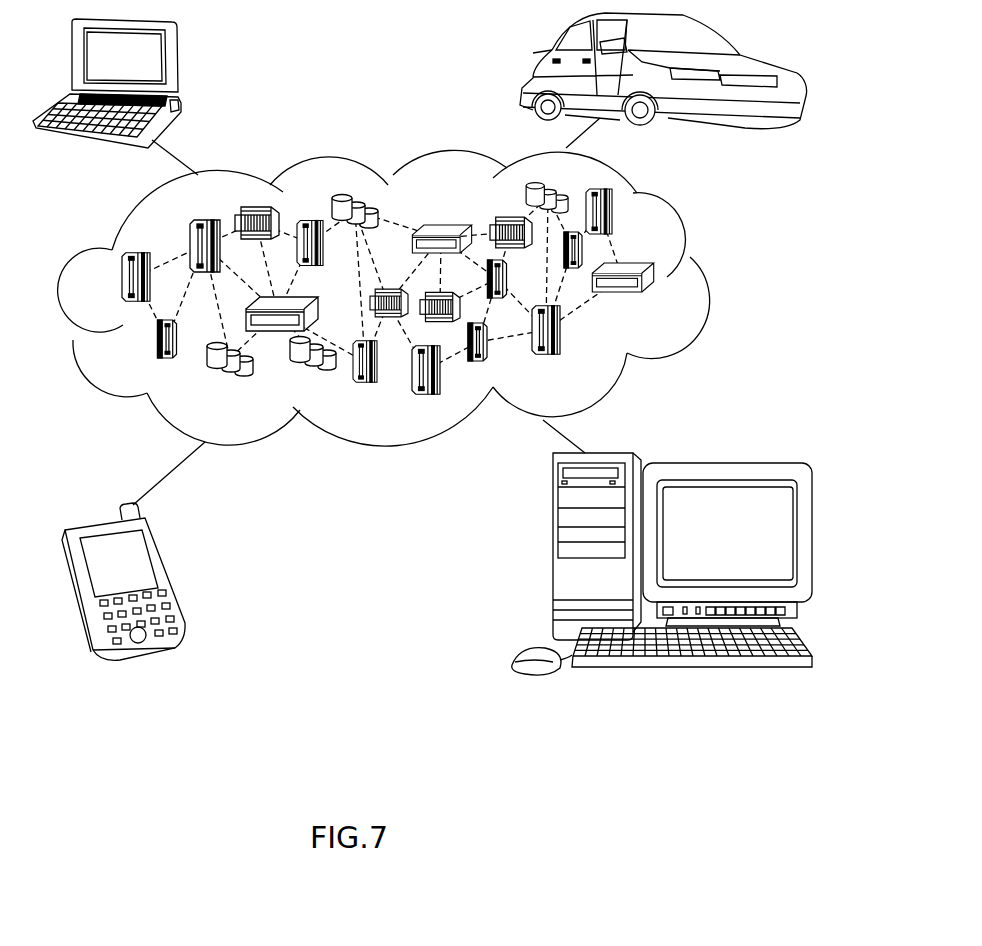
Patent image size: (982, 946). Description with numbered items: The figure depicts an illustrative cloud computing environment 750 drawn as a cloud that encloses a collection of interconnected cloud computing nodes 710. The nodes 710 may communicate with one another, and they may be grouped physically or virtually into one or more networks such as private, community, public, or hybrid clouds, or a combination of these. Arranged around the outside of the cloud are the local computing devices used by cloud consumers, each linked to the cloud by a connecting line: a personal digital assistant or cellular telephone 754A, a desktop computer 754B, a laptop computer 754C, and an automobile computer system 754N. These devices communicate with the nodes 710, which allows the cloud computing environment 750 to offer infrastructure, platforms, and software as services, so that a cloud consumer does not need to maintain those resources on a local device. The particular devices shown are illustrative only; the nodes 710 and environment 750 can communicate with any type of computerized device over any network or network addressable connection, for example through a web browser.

The cloud computing nodes 710 is at (672, 295).
The cloud computing environment 750 is at (695, 242).
The personal digital assistant or cellular telephone 754A is at (168, 572).
The desktop computer 754B is at (553, 553).
The laptop computer 754C is at (178, 62).
The automobile computer system 754N is at (530, 67).